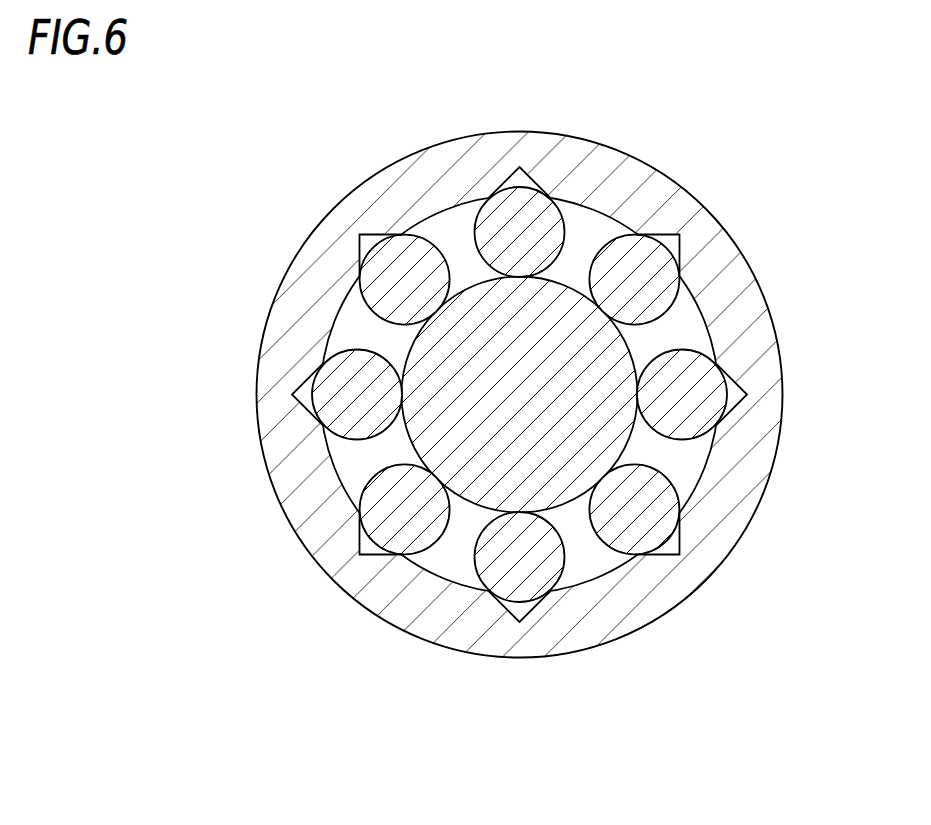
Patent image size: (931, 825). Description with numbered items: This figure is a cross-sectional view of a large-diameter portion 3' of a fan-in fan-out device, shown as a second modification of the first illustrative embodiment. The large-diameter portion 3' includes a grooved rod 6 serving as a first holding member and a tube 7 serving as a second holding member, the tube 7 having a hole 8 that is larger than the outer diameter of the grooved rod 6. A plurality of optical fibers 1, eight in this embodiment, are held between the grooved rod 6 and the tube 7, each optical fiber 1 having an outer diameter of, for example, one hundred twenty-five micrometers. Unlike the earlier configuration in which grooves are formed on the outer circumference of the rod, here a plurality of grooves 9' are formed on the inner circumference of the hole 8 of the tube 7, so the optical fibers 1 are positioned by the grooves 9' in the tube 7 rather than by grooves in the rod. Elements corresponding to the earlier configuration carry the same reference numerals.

The optical fiber 1 is at (429, 234).
The large-diameter portion 3' is at (519, 377).
The grooved rod 6 is at (645, 347).
The tube 7 is at (780, 334).
The hole 8 is at (590, 560).
The grooves 9' is at (264, 395).